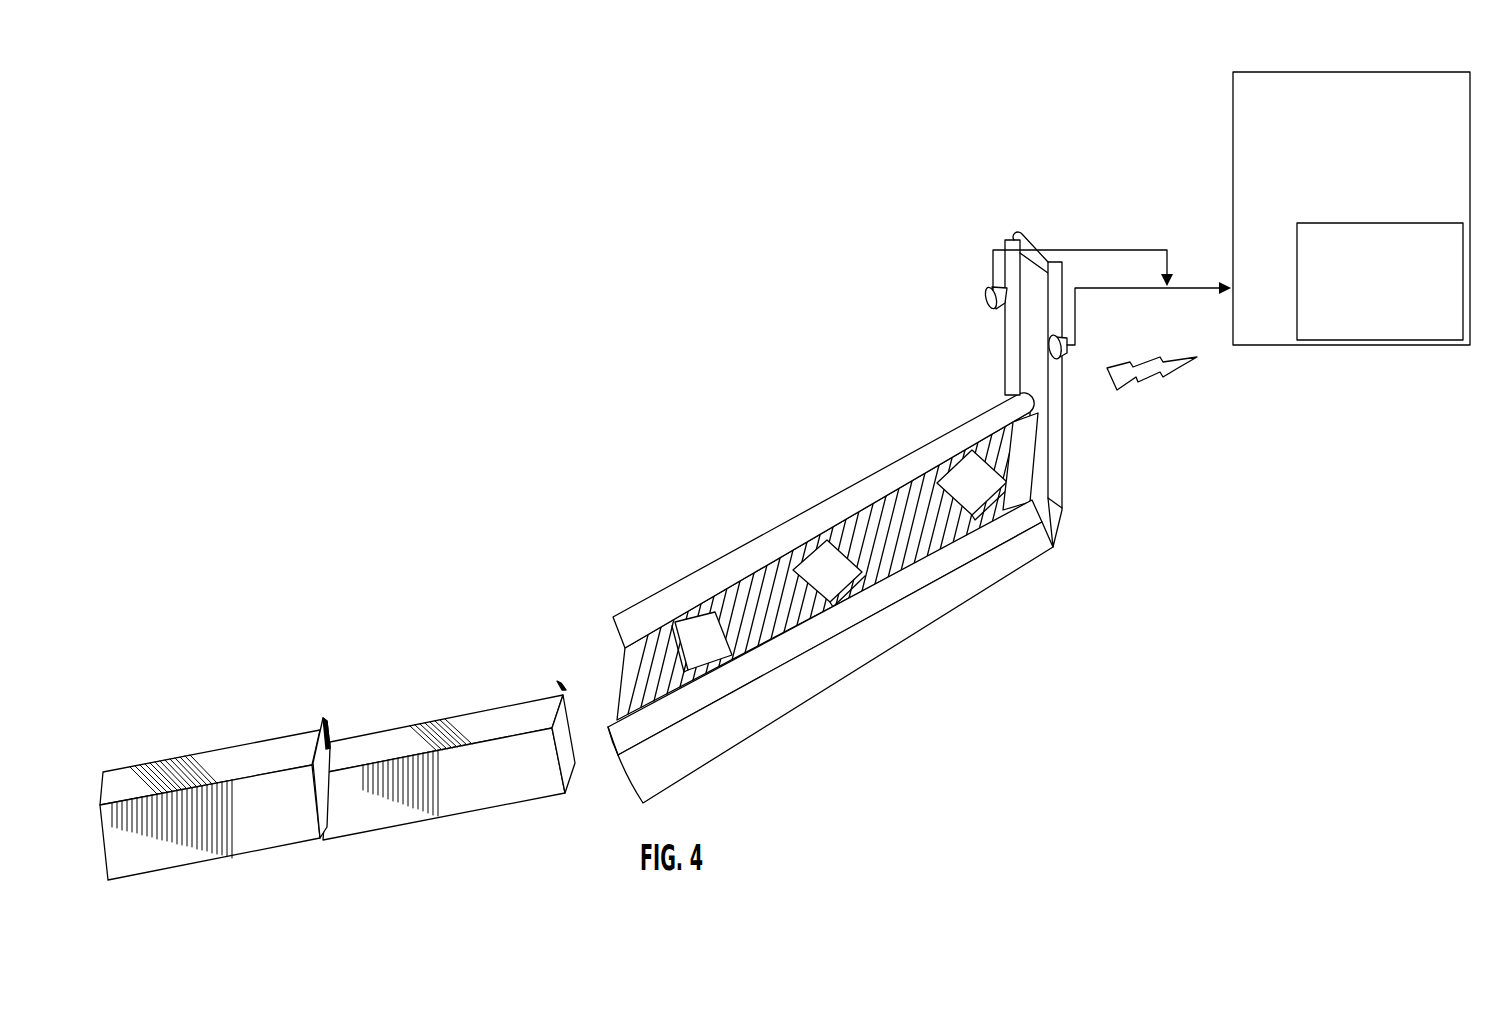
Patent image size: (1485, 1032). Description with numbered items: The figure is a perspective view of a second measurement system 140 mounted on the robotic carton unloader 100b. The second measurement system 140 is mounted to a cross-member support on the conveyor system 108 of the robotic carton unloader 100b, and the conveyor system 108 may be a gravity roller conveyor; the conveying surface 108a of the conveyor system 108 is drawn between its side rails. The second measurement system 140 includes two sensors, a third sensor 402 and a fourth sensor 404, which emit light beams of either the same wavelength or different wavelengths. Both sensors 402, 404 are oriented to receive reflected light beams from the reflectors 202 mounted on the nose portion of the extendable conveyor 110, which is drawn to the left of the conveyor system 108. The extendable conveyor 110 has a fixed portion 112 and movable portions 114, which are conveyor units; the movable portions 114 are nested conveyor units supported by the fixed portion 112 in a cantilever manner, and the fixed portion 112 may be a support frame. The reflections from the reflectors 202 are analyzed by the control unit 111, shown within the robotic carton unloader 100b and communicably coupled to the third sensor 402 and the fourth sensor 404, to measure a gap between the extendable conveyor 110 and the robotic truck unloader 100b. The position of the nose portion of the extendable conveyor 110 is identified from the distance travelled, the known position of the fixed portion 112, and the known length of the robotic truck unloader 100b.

The robotic carton unloader 100b is at (1460, 216).
The control unit 111 is at (1394, 311).
The second measurement system 140 is at (998, 226).
The third sensor 402 is at (983, 297).
The fourth sensor 404 is at (1062, 364).
The conveyor system 108 is at (888, 462).
The conveyor surface 108a is at (862, 523).
The fixed portion 112 is at (820, 563).
The extendable conveyor 110 is at (383, 618).
The movable portions 114 is at (357, 823).
The reflectors 202 is at (562, 683).